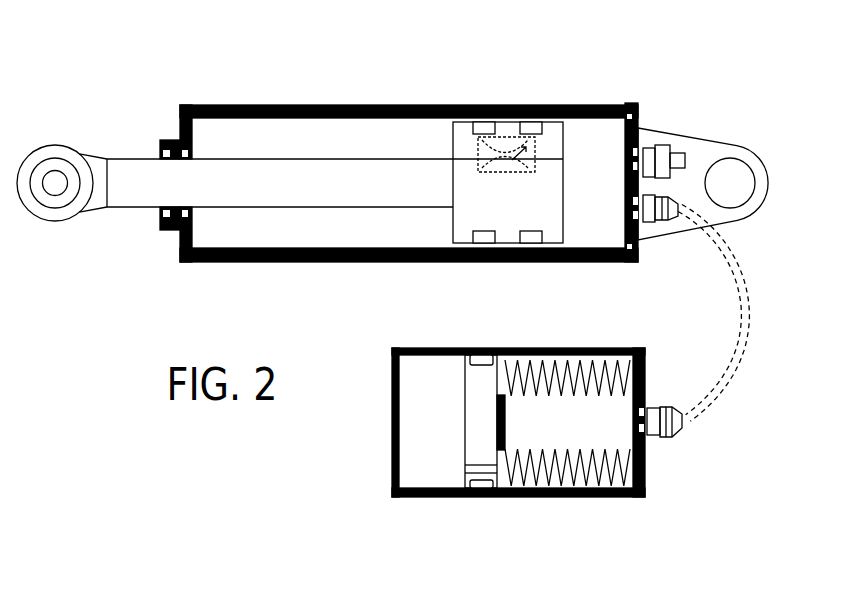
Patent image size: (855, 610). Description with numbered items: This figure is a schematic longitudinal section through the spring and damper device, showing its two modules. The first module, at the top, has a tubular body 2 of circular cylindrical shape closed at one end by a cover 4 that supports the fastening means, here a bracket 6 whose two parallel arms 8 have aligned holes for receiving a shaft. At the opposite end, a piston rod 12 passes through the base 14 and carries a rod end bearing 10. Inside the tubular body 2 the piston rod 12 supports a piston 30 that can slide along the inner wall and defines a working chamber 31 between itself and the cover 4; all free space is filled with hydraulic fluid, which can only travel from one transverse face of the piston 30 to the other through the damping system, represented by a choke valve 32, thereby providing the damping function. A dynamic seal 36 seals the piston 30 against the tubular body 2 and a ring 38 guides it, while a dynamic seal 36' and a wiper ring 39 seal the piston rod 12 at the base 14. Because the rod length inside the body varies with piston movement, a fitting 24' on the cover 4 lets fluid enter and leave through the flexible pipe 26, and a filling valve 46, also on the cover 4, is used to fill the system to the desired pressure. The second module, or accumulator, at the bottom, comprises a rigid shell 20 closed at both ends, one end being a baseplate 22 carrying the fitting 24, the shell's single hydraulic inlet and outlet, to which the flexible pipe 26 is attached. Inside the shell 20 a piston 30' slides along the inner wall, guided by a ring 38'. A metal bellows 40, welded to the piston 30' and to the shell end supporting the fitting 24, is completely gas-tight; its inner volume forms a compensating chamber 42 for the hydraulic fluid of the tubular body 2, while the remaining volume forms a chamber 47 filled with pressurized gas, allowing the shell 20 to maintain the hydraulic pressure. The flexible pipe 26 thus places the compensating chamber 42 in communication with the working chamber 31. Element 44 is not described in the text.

The tubular body 2 is at (313, 105).
The cover 4 is at (622, 143).
The bracket 6 is at (650, 138).
The arms 8 is at (752, 158).
The rod end bearing 10 is at (45, 212).
The piston rod 12 is at (133, 192).
The base 14 is at (177, 115).
The rigid shell 20 is at (417, 497).
The baseplate 22 is at (647, 380).
The fitting 24 is at (660, 448).
The fitting 24' is at (658, 245).
The flexible pipe 26 is at (735, 290).
The piston 30 is at (535, 182).
The piston 30' is at (453, 421).
The working chamber 31 is at (595, 230).
The choke valve 32 is at (508, 140).
The dynamic seal 36 is at (472, 93).
The dynamic seal 36' is at (220, 171).
The ring 38 is at (539, 93).
The ring 38' is at (490, 516).
The wiper ring 39 is at (160, 152).
The metal bellows 40 is at (543, 358).
The compensating chamber 42 is at (583, 428).
The accumulator piston valve 44 is at (480, 465).
The filling valve 46 is at (670, 152).
The chamber 47 is at (390, 477).